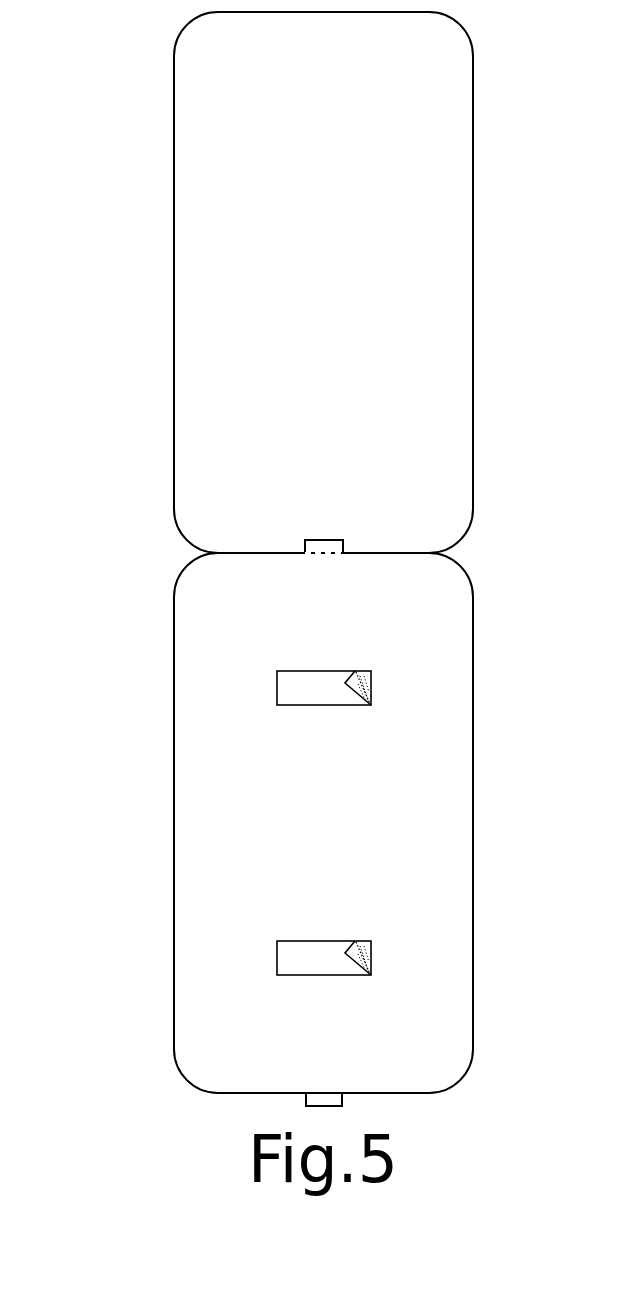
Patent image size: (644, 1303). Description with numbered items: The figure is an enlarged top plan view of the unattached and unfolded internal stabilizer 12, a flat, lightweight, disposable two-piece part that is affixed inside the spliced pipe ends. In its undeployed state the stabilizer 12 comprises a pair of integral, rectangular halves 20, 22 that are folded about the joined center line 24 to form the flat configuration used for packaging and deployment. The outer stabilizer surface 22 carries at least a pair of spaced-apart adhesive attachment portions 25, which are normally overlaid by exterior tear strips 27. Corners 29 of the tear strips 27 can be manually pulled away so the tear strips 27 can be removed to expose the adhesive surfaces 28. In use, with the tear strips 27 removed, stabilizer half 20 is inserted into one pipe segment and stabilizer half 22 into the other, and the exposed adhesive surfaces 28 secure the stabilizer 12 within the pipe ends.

The stabilizer 12 is at (157, 413).
The stabilizer half 20 is at (450, 293).
The stabilizer half 22 is at (430, 803).
The joined center line 24 is at (260, 552).
The adhesive attachment portions 25 is at (373, 695).
The tear strips 27 is at (293, 688).
The adhesive surfaces 28 is at (365, 675).
The corners 29 is at (345, 683).